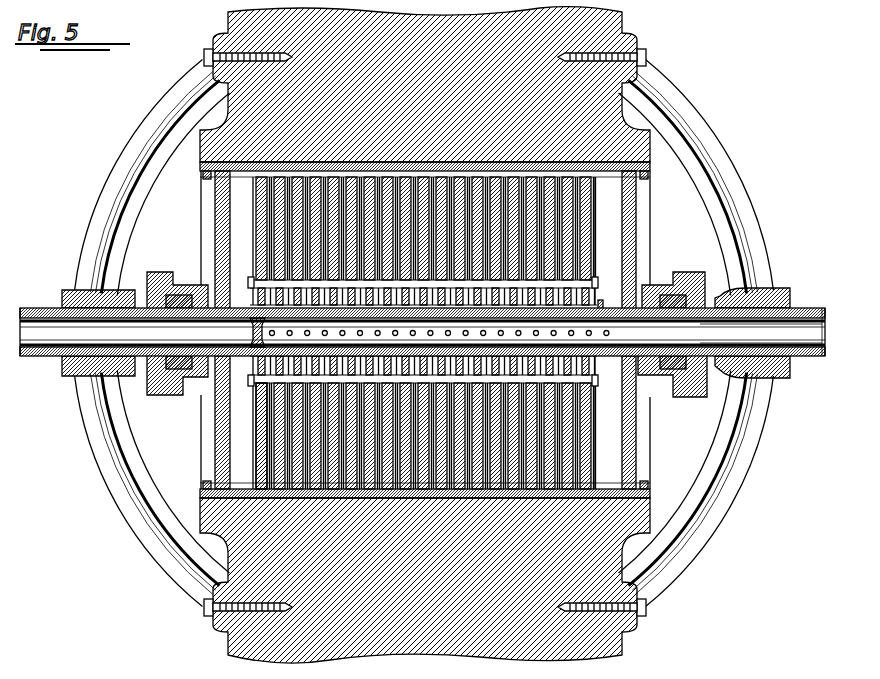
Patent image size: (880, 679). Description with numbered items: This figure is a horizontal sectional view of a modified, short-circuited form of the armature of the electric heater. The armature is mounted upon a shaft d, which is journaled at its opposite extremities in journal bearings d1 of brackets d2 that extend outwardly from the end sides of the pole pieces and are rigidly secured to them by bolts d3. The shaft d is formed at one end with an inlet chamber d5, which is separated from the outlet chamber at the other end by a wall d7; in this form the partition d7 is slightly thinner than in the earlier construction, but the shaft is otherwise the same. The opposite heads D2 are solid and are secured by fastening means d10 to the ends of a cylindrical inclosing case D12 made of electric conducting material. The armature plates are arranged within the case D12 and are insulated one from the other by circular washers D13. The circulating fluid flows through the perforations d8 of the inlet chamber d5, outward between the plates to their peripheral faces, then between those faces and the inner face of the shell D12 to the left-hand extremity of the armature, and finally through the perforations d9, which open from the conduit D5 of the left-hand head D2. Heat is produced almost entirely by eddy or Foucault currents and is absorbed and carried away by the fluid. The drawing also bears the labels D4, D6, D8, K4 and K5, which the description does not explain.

The armature shaft d is at (42, 352).
The journal bearings d1 is at (66, 294).
The brackets d2 is at (104, 201).
The bolts d3 is at (205, 57).
The inlet chamber d5 is at (761, 332).
The wall d7 is at (240, 333).
The apertures d8 is at (420, 334).
The apertures d9 is at (240, 307).
The fastening means d10 is at (203, 176).
The heads D2 is at (215, 438).
The bolt D4 is at (596, 270).
The conduit D5 is at (344, 177).
The hub blocks D6 is at (175, 274).
The end plate D8 is at (258, 393).
The cylindrical inclosing case D12 is at (405, 166).
The circular washers D13 is at (266, 430).
The lower housing K4 is at (425, 580).
The upper housing K5 is at (425, 84).